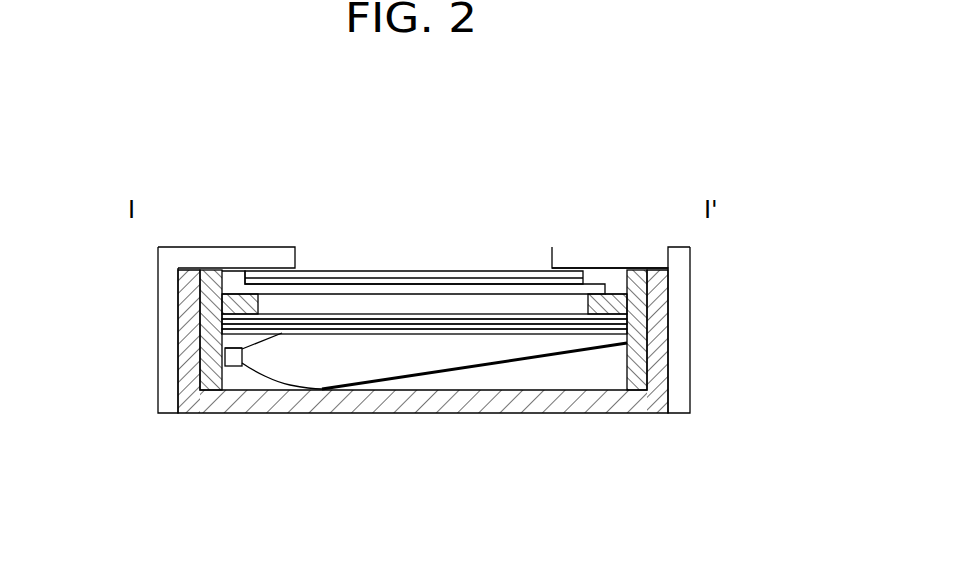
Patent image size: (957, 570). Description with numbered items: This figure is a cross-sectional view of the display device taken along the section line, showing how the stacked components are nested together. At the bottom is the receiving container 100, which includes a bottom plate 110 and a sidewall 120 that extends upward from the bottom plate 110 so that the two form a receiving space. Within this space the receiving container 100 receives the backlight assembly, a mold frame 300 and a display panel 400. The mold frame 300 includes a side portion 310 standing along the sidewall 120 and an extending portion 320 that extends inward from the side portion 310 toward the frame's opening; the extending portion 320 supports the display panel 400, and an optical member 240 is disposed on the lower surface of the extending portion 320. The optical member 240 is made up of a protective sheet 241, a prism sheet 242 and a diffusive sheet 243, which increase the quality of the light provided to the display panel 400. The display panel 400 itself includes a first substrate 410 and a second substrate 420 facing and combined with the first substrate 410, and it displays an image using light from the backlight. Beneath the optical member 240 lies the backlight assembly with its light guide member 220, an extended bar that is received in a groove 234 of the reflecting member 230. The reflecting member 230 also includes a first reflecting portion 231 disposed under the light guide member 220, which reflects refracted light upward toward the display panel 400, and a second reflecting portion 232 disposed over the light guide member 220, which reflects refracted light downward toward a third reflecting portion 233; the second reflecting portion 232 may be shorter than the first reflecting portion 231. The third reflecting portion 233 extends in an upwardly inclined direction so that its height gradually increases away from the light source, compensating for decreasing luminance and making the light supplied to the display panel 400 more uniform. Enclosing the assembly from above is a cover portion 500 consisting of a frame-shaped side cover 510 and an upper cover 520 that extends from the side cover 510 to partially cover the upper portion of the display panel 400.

The receiving container 100 is at (80, 362).
The bottom plate 110 is at (207, 405).
The sidewall 120 is at (207, 369).
The light guide member 220 is at (236, 348).
The reflecting member 230 is at (400, 483).
The first reflecting portion 231 is at (303, 386).
The second reflecting portion 232 is at (258, 344).
The third reflecting portion 233 is at (380, 382).
The groove 234 is at (236, 366).
The optical member 240 is at (555, 195).
The protective sheet 241 is at (447, 318).
The prism sheet 242 is at (488, 323).
The diffusive sheet 243 is at (532, 328).
The mold frame 300 is at (80, 297).
The side portion 310 is at (222, 332).
The extending portion 320 is at (222, 304).
The display panel 400 is at (650, 195).
The first substrate 410 is at (600, 283).
The second substrate 420 is at (568, 274).
The cover portion 500 is at (80, 232).
The side cover 510 is at (162, 275).
The upper cover 520 is at (172, 247).